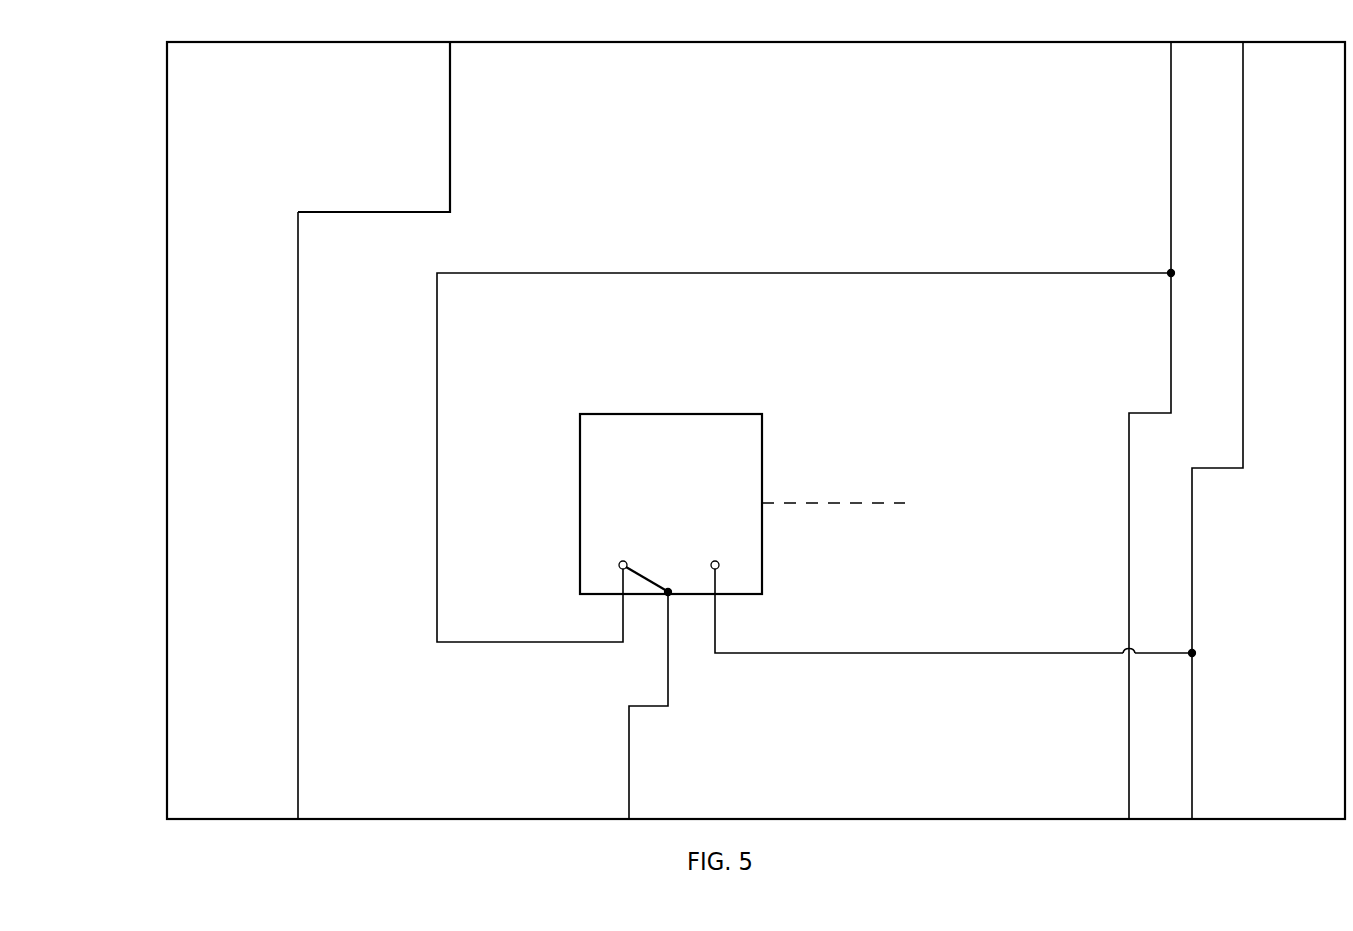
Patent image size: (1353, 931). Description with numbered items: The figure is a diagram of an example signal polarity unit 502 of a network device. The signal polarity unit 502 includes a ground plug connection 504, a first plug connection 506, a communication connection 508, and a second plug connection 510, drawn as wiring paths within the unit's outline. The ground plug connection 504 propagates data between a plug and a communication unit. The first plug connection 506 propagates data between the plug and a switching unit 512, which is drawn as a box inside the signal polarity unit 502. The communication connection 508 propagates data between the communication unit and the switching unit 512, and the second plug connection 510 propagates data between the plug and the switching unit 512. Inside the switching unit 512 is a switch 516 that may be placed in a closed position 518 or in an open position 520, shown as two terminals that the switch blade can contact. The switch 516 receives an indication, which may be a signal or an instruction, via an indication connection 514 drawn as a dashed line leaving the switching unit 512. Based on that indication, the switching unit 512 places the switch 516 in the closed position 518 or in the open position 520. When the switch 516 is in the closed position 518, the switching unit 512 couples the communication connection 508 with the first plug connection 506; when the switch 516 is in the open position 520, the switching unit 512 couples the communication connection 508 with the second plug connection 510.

The signal polarity unit 502 is at (270, 112).
The ground plug connection 504 is at (323, 212).
The first plug connection 506 is at (1171, 172).
The communication connection 508 is at (629, 752).
The second plug connection 510 is at (1243, 168).
The switching unit 512 is at (655, 482).
The indication connection 514 is at (866, 503).
The switch 516 is at (657, 578).
The closed position 518 is at (625, 561).
The open position 520 is at (715, 561).